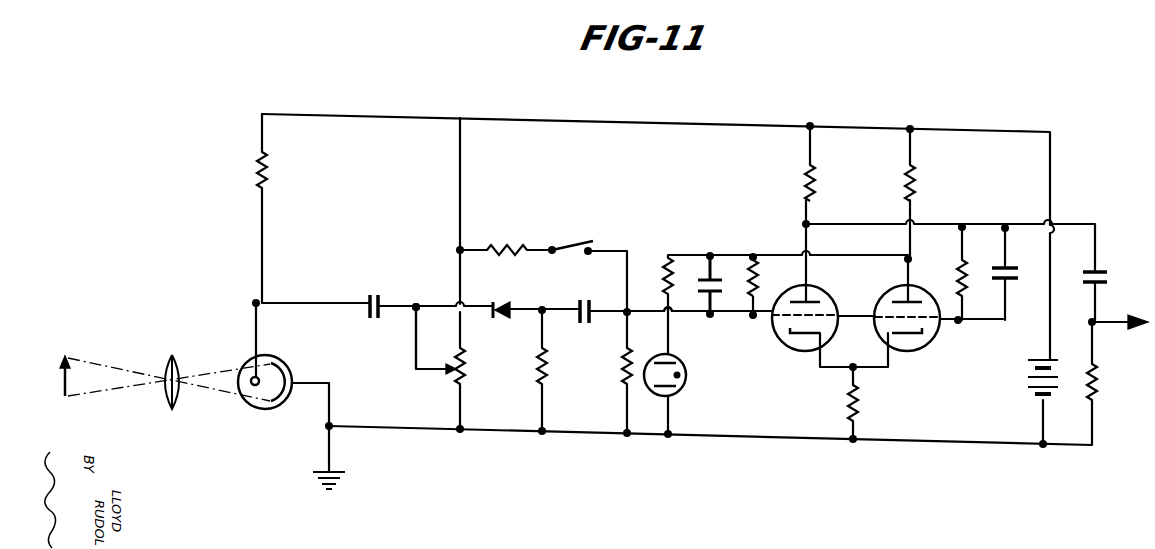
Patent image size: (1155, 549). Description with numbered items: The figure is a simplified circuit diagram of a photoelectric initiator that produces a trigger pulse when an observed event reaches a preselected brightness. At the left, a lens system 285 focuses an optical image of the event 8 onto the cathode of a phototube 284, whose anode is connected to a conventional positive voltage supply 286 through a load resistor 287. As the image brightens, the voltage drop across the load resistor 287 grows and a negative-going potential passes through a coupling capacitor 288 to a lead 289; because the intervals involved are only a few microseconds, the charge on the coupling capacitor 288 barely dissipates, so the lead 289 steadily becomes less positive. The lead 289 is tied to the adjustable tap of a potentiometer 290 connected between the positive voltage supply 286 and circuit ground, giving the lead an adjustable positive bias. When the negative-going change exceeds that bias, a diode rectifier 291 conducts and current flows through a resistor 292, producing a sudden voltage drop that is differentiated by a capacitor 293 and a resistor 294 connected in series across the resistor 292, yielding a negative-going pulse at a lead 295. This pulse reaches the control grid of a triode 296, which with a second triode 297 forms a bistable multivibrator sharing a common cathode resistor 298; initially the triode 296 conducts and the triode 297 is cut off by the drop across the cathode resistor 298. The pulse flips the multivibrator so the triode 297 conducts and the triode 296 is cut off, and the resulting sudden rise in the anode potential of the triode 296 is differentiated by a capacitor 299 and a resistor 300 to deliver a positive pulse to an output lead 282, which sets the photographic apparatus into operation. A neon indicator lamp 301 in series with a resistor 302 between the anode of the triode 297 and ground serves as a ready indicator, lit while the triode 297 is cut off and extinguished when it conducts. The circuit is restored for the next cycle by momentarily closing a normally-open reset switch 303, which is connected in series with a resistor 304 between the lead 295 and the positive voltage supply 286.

The event 8 is at (60, 384).
The lead 282 is at (1114, 317).
The phototube 284 is at (276, 360).
The lens system 285 is at (174, 358).
The positive voltage supply 286 is at (1026, 383).
The load resistor 287 is at (260, 176).
The coupling capacitor 288 is at (376, 287).
The lead 289 is at (410, 299).
The potentiometer 290 is at (466, 365).
The diode rectifier 291 is at (500, 303).
The resistor 292 is at (548, 366).
The capacitor 293 is at (585, 299).
The resistor 294 is at (616, 379).
The lead 295 is at (652, 314).
The triode vacuum tube section 296 is at (786, 346).
The triode vacuum tube section 297 is at (905, 350).
The common cathode resistor 298 is at (846, 407).
The capacitor 299 is at (1106, 275).
The resistor 300 is at (1100, 378).
The neon indicator lamp 301 is at (682, 366).
The resistor 302 is at (664, 270).
The reset switch 303 is at (570, 248).
The resistor 304 is at (511, 247).